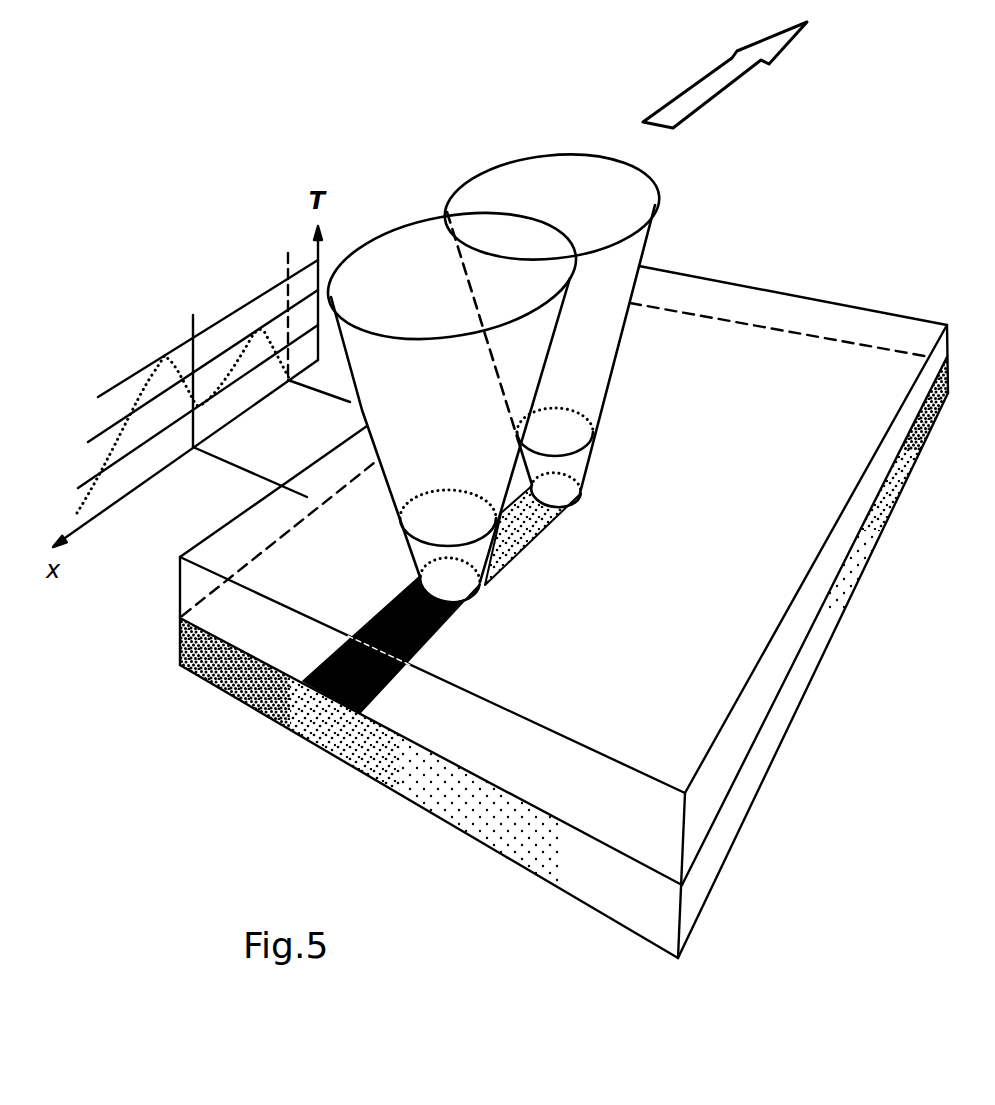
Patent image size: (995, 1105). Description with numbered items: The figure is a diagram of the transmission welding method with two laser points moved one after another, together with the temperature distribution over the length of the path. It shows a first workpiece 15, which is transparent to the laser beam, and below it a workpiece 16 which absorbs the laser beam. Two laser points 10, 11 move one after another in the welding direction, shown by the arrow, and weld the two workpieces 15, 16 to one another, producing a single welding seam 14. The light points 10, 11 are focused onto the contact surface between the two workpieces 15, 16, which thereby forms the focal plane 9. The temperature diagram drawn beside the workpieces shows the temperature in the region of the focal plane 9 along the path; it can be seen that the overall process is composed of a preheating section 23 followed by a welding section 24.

The focal plane 9 is at (837, 582).
The laser point 10 is at (477, 593).
The laser point 11 is at (562, 492).
The welding seam 14 is at (378, 610).
The first workpiece 15 is at (743, 723).
The workpiece 16 is at (813, 650).
The preheating section 23 is at (237, 303).
The welding section 24 is at (155, 338).